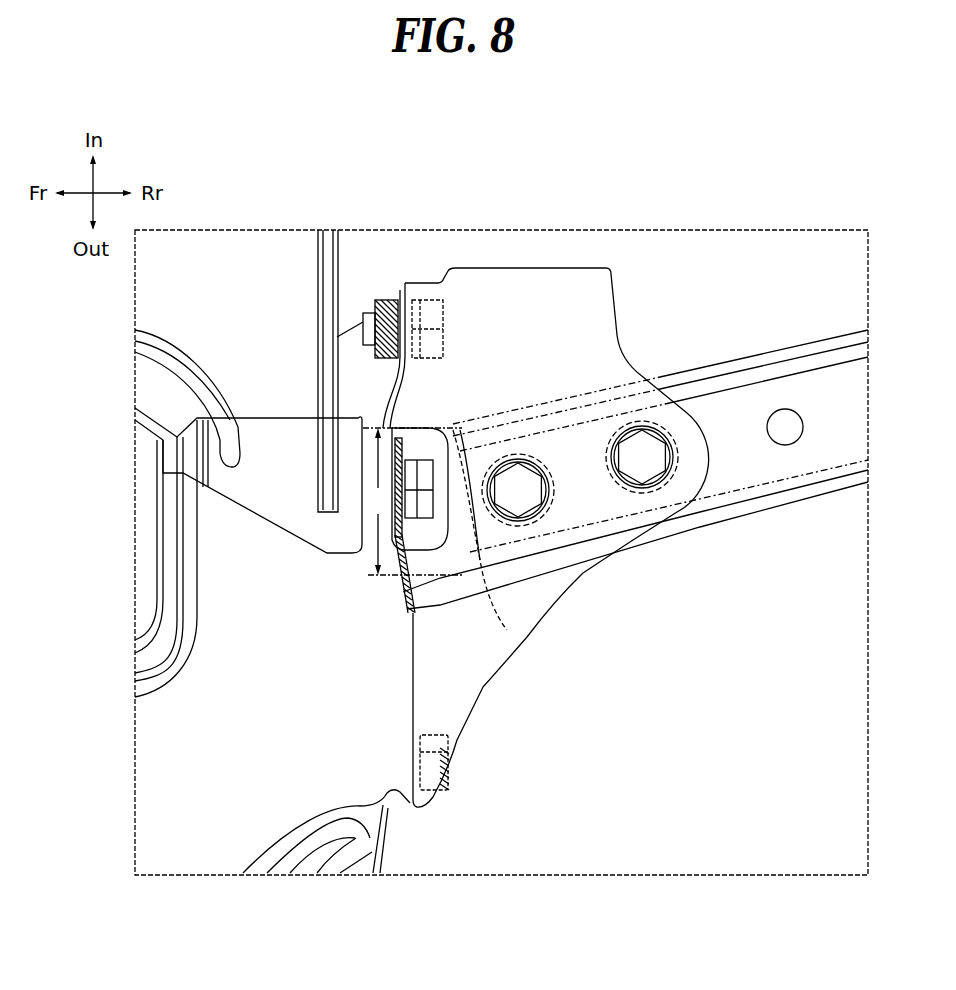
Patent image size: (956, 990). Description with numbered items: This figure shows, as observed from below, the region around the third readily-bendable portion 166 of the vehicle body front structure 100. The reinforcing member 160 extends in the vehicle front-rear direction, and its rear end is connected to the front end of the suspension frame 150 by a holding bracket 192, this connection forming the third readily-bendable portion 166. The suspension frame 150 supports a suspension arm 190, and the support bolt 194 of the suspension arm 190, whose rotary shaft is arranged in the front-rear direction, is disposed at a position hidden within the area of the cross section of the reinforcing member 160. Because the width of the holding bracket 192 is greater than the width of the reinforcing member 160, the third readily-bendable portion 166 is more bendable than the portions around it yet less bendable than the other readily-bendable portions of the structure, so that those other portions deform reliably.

The vehicle body front structure 100 is at (532, 191).
The suspension frame 150 is at (210, 852).
The reinforcing member 160 is at (735, 353).
The third readily-bendable portion 166 is at (497, 692).
The suspension arm 190 is at (264, 249).
The holding bracket 192 is at (588, 294).
The support bolt 194 is at (522, 636).